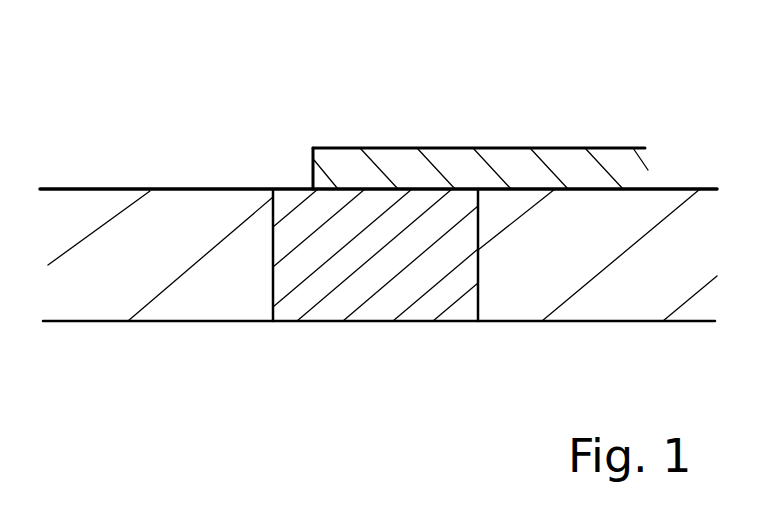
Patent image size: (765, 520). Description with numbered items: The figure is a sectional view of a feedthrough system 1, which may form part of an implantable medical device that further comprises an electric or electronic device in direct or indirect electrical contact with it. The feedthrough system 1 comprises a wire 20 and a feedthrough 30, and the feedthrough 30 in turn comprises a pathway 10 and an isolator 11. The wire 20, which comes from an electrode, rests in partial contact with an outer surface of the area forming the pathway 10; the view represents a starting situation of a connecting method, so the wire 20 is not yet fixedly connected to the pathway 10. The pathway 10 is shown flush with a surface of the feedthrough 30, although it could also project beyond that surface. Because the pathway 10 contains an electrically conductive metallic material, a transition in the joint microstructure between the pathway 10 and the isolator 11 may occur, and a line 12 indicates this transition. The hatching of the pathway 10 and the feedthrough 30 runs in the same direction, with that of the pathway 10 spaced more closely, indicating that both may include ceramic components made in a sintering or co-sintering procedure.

The feedthrough system 1 is at (275, 82).
The pathway 10 is at (358, 290).
The isolator 11 is at (204, 287).
The line 12 is at (476, 298).
The wire 20 is at (460, 172).
The feedthrough 30 is at (258, 163).